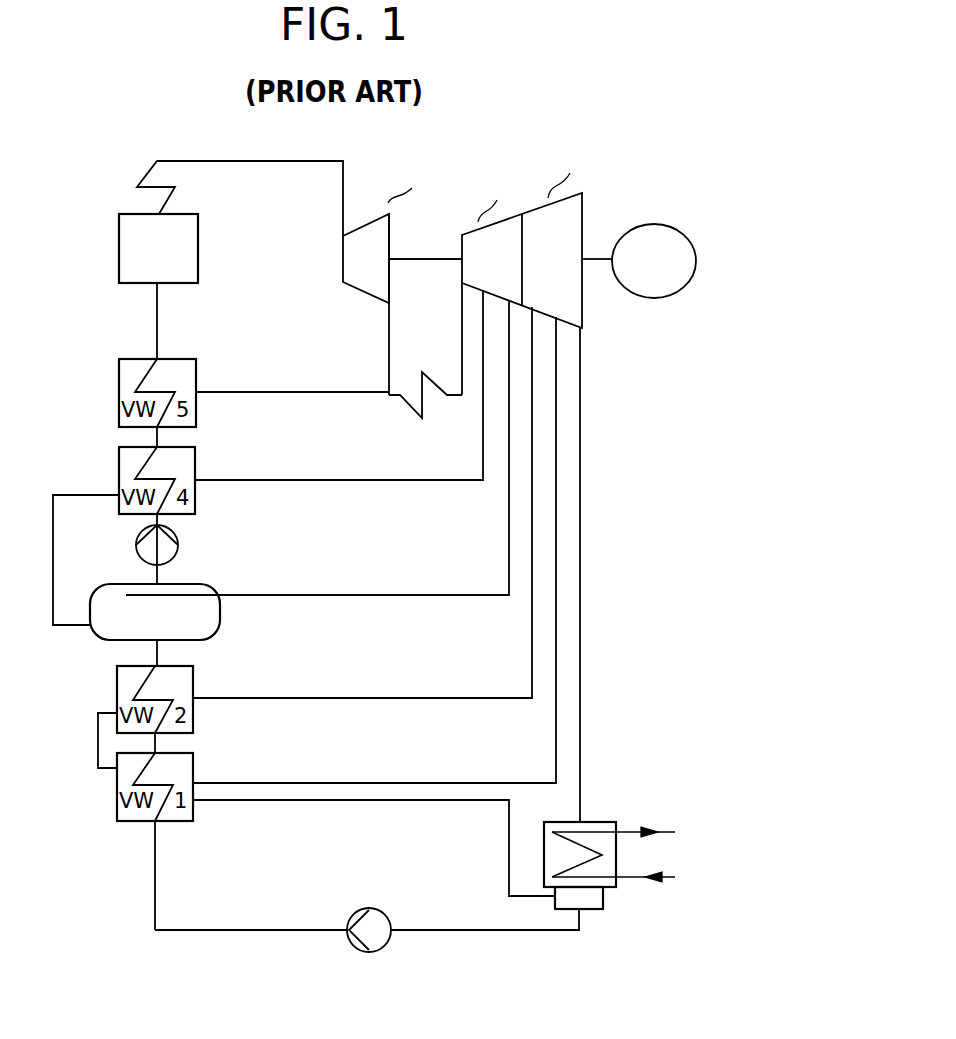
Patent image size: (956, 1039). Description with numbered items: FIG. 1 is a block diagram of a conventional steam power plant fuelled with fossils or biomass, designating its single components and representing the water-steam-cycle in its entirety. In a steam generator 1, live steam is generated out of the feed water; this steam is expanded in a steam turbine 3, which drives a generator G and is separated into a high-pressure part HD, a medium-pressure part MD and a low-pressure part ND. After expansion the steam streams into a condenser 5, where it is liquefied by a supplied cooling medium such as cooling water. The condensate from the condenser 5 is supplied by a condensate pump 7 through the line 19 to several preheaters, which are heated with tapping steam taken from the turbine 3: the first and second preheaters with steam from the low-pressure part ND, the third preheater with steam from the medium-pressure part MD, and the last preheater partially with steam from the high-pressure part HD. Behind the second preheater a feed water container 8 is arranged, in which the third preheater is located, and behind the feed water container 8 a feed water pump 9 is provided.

The steam generator 1 is at (119, 244).
The steam turbine 3 is at (463, 123).
The condenser 5 is at (600, 822).
The condensate pump 7 is at (388, 947).
The feed water container 8 is at (102, 637).
The feed water pump 9 is at (135, 543).
The condensate line 19 is at (481, 931).